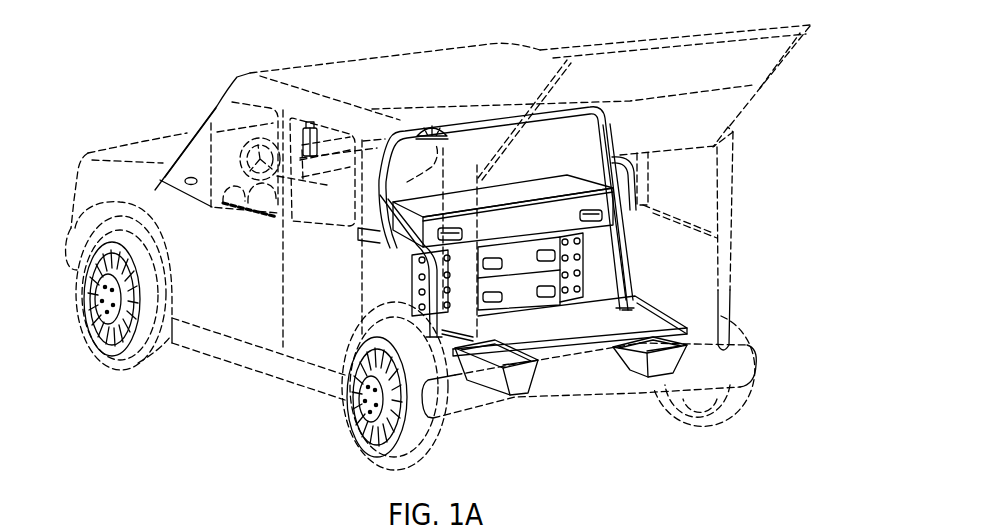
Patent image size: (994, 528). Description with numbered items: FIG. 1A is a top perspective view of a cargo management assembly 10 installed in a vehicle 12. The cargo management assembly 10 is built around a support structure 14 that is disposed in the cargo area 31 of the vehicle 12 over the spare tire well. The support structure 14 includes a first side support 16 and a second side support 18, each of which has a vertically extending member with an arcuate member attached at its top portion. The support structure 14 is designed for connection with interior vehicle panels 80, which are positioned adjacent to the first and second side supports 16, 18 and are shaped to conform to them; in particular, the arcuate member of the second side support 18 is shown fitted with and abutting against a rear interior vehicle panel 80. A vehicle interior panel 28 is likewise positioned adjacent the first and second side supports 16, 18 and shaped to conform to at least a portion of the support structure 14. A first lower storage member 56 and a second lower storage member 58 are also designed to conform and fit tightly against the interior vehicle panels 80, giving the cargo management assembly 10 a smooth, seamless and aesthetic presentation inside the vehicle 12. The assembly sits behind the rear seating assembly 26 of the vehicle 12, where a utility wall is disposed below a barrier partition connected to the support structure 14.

The cargo management assembly 10 is at (650, 210).
The vehicle 12 is at (548, 47).
The support structure 14 is at (468, 207).
The first side support 16 is at (447, 303).
The second side support 18 is at (622, 262).
The rear seating assembly 26 is at (247, 142).
The vehicle interior panel 28 is at (426, 119).
The cargo area 31 is at (645, 325).
The first lower storage member 56 is at (503, 385).
The second lower storage member 58 is at (642, 365).
The interior vehicle panel 80 is at (692, 268).